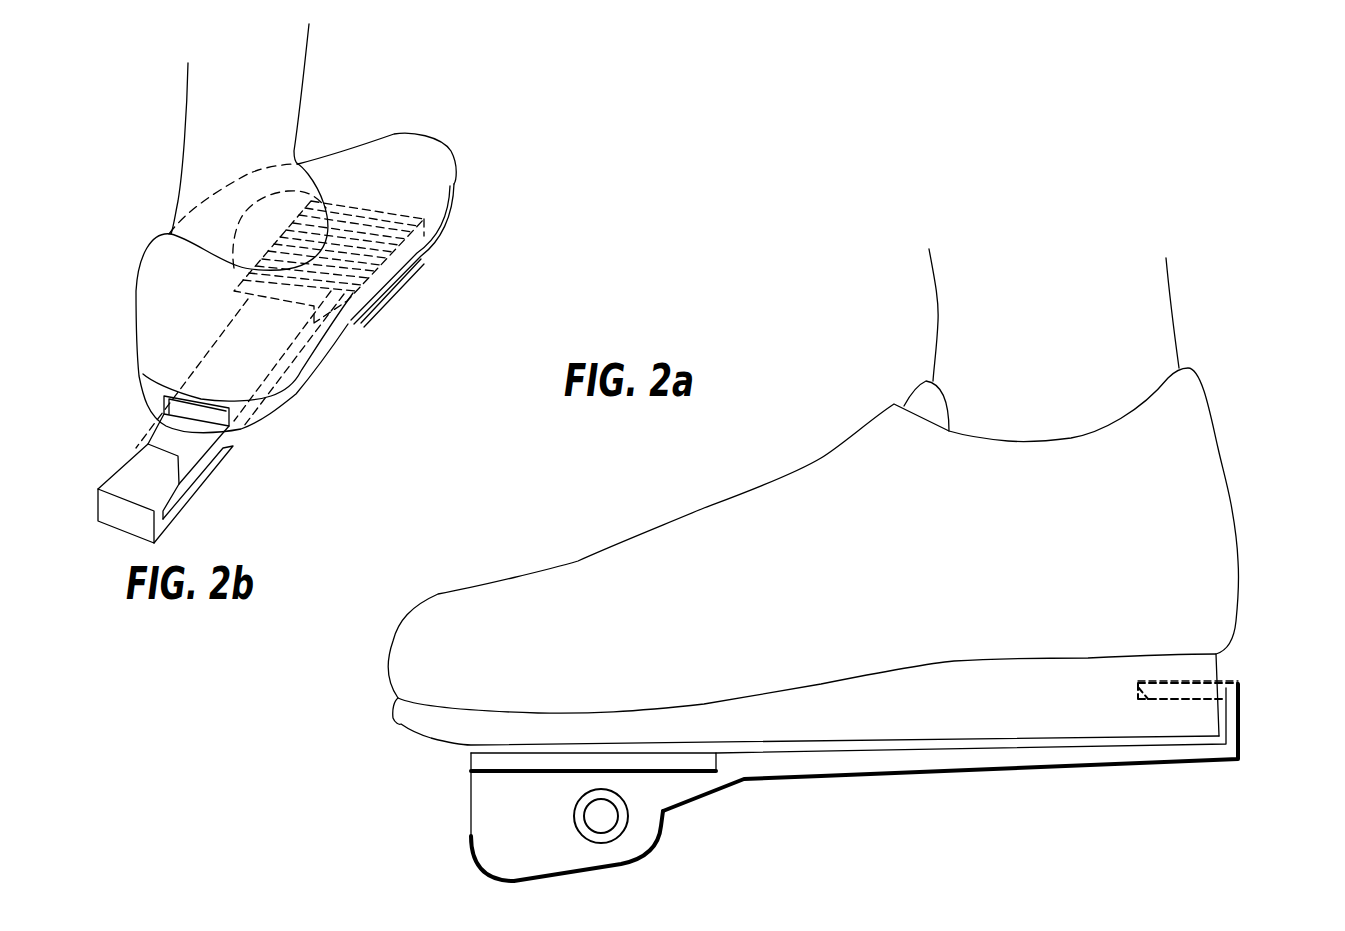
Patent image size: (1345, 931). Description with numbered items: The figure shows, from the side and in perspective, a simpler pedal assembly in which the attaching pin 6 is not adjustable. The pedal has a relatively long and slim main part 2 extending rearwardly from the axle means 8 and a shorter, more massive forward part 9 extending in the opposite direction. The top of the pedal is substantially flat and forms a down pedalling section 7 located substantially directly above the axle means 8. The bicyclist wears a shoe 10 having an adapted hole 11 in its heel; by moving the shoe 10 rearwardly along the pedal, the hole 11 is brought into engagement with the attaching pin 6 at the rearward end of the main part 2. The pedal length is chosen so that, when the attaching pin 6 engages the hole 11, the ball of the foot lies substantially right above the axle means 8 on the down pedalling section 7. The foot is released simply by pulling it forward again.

In FIG. 2a, the main part 2 is at (826, 770).
In FIG. 2a, the attaching pin 6 is at (1218, 688).
In FIG. 2b, the attaching pin 6 is at (115, 463).
In FIG. 2a, the down pedalling section 7 is at (476, 770).
In FIG. 2a, the axle means 8 is at (613, 828).
In FIG. 2a, the forward part 9 is at (503, 838).
In FIG. 2a, the shoe 10 is at (420, 723).
In FIG. 2b, the shoe 10 is at (350, 321).
In FIG. 2a, the hole 11 is at (1218, 671).
In FIG. 2b, the hole 11 is at (248, 423).